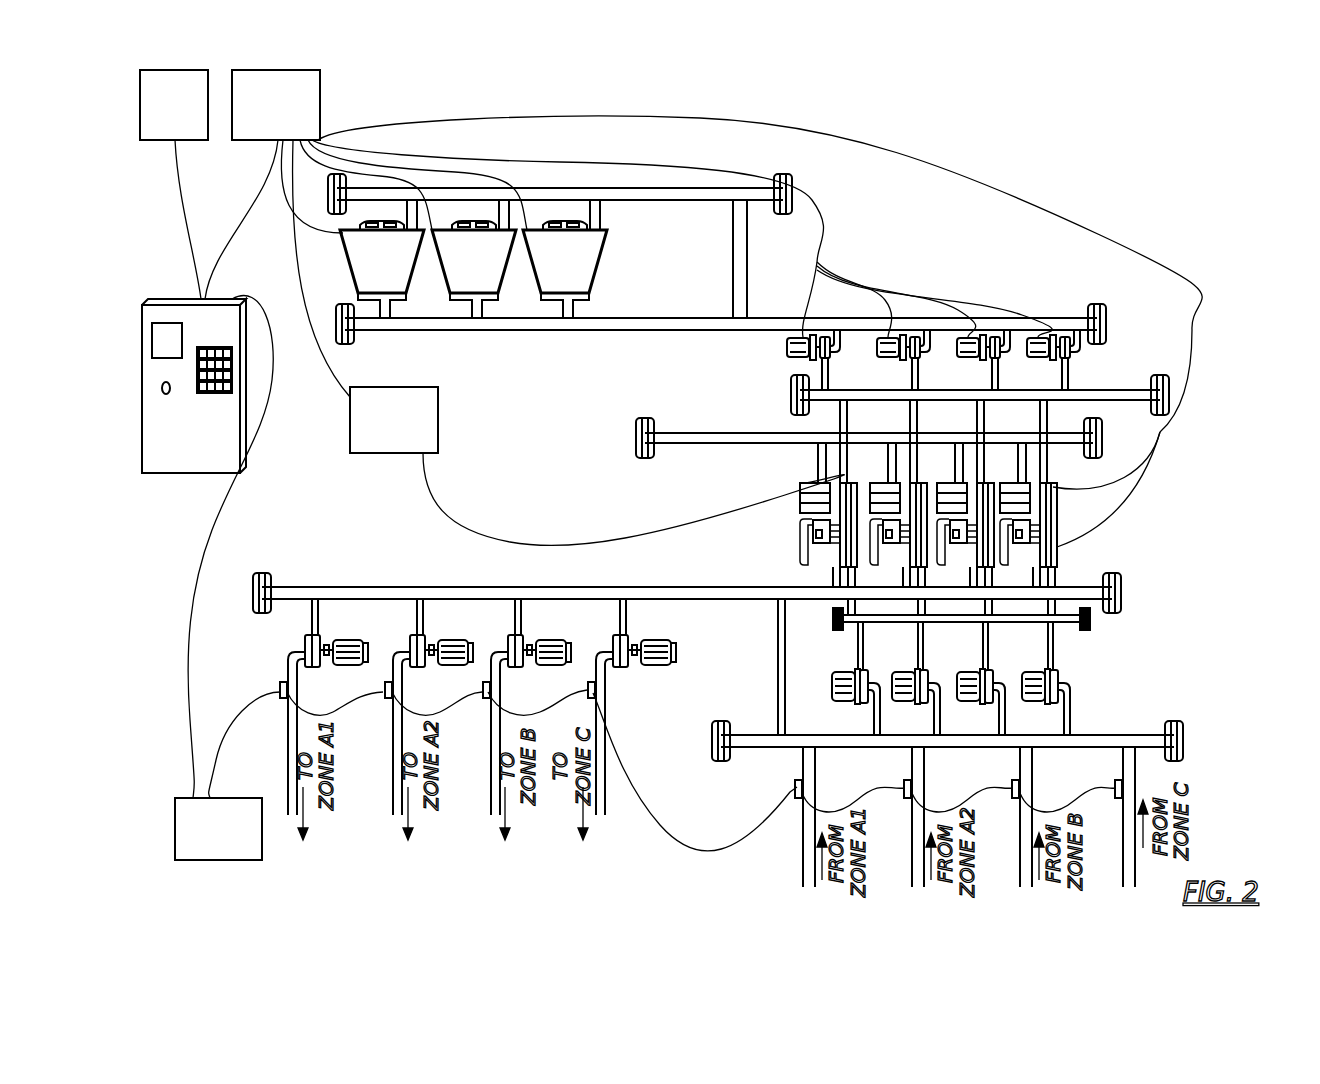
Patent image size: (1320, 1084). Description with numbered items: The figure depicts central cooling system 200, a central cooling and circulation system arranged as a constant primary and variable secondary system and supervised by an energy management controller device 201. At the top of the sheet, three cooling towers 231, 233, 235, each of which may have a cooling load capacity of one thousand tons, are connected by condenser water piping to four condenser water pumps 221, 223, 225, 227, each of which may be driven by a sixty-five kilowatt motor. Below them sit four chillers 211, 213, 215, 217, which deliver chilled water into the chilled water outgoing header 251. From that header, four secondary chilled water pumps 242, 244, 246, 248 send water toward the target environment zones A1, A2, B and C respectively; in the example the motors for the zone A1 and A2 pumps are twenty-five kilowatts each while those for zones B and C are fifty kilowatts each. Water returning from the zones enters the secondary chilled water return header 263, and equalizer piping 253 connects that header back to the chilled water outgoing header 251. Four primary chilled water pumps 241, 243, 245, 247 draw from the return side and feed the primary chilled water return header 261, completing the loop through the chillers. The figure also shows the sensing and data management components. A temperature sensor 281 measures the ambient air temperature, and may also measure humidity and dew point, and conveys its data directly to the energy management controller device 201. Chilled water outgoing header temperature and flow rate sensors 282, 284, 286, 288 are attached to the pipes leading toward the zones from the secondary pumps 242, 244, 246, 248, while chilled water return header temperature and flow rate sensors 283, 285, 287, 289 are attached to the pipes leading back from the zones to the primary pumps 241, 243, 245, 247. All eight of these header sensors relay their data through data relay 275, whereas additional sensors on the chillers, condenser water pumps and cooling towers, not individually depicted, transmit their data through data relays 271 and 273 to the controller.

The central cooling system 200 is at (1192, 140).
The energy management controller device 201 is at (163, 477).
The chiller 211 is at (798, 531).
The chiller 213 is at (884, 460).
The chiller 215 is at (953, 460).
The chiller 217 is at (1056, 539).
The condenser water pump 221 is at (790, 357).
The condenser water pump 223 is at (877, 350).
The condenser water pump 225 is at (966, 350).
The condenser water pump 227 is at (1066, 357).
The cooling tower 231 is at (352, 268).
The cooling tower 233 is at (450, 296).
The cooling tower 235 is at (540, 278).
The primary chilled water pump 241 is at (834, 672).
The primary chilled water pump 243 is at (897, 672).
The primary chilled water pump 245 is at (960, 672).
The primary chilled water pump 247 is at (1060, 676).
The secondary chilled water pump 242 is at (302, 645).
The secondary chilled water pump 244 is at (412, 641).
The secondary chilled water pump 246 is at (545, 642).
The secondary chilled water pump 248 is at (668, 647).
The chilled water outgoing header 251 is at (360, 586).
The equalizer piping 253 is at (777, 654).
The primary chilled water return header 261 is at (1095, 619).
The secondary chilled water return header 263 is at (1116, 735).
The data relay 271 is at (276, 105).
The data relay 273 is at (394, 420).
The data relay 275 is at (218, 829).
The temperature sensor 281 is at (174, 105).
The chilled water outgoing header temperature and flow rate sensor 282 is at (279, 684).
The chilled water outgoing header temperature and flow rate sensor 284 is at (383, 689).
The chilled water outgoing header temperature and flow rate sensor 286 is at (482, 689).
The chilled water outgoing header temperature and flow rate sensor 288 is at (586, 689).
The chilled water return header temperature and flow rate sensor 283 is at (793, 785).
The chilled water return header temperature and flow rate sensor 285 is at (903, 786).
The chilled water return header temperature and flow rate sensor 287 is at (1011, 786).
The chilled water return header temperature and flow rate sensor 289 is at (1113, 788).